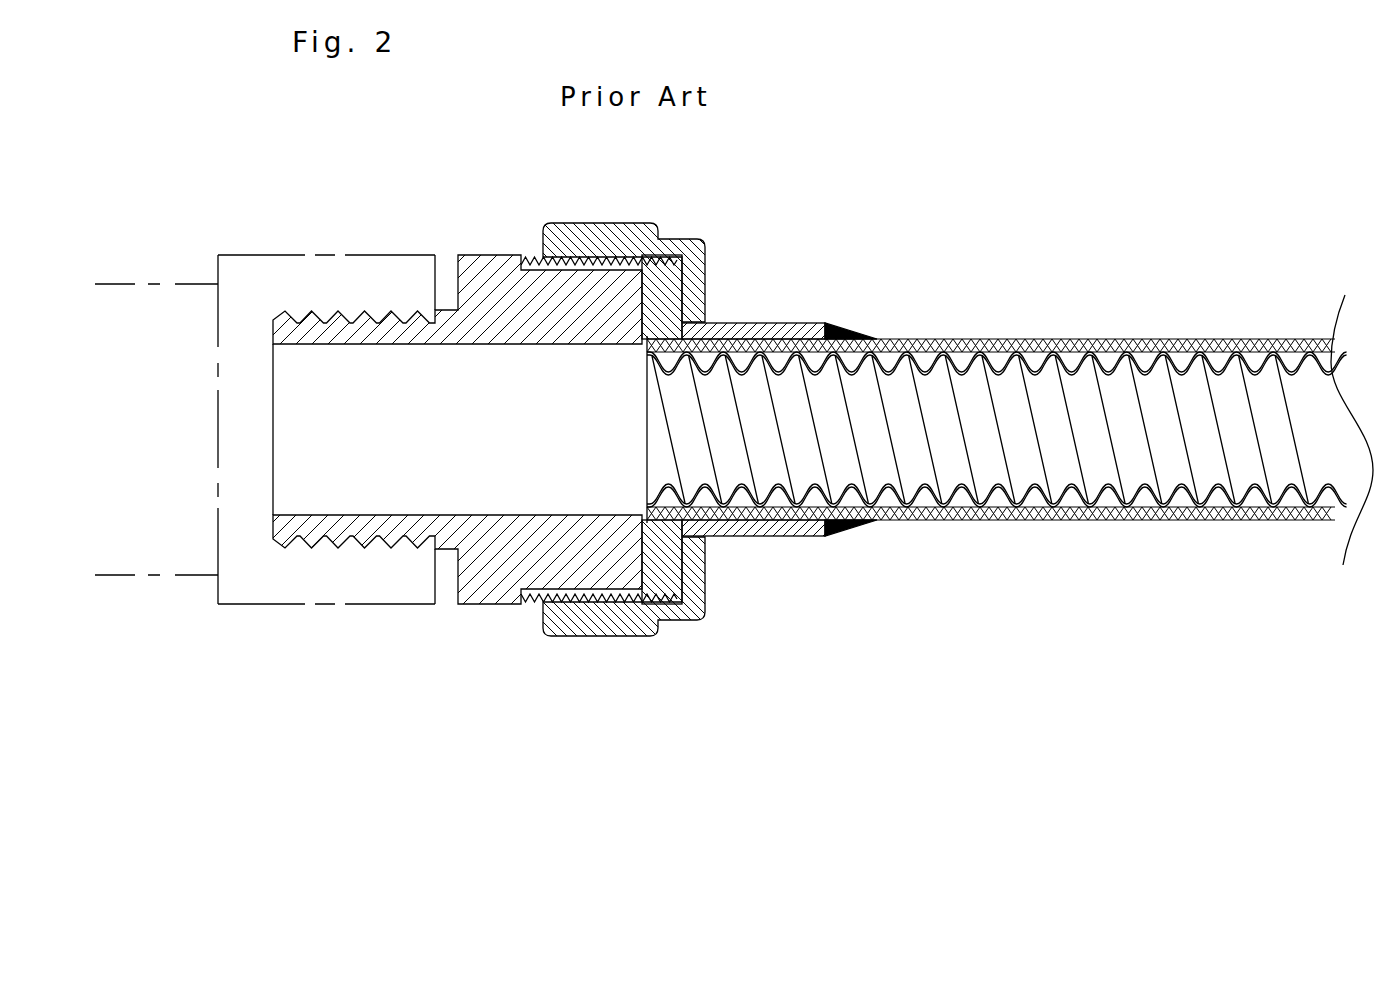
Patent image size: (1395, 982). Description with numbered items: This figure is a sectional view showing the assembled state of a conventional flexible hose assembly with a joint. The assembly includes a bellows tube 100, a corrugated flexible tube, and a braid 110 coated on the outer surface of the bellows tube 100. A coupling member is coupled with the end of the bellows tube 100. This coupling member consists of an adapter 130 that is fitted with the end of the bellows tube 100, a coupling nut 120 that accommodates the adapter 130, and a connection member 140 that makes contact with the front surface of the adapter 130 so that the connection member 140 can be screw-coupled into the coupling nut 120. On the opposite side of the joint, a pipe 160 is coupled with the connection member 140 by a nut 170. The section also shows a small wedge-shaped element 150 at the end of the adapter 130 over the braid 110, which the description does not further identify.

The bellows tube 100 is at (955, 365).
The braid 110 is at (1068, 348).
The coupling nut 120 is at (611, 232).
The adapter 130 is at (680, 560).
The connection member 140 is at (483, 606).
The sealing band 150 is at (845, 328).
The pipe 160 is at (150, 283).
The nut 170 is at (300, 255).